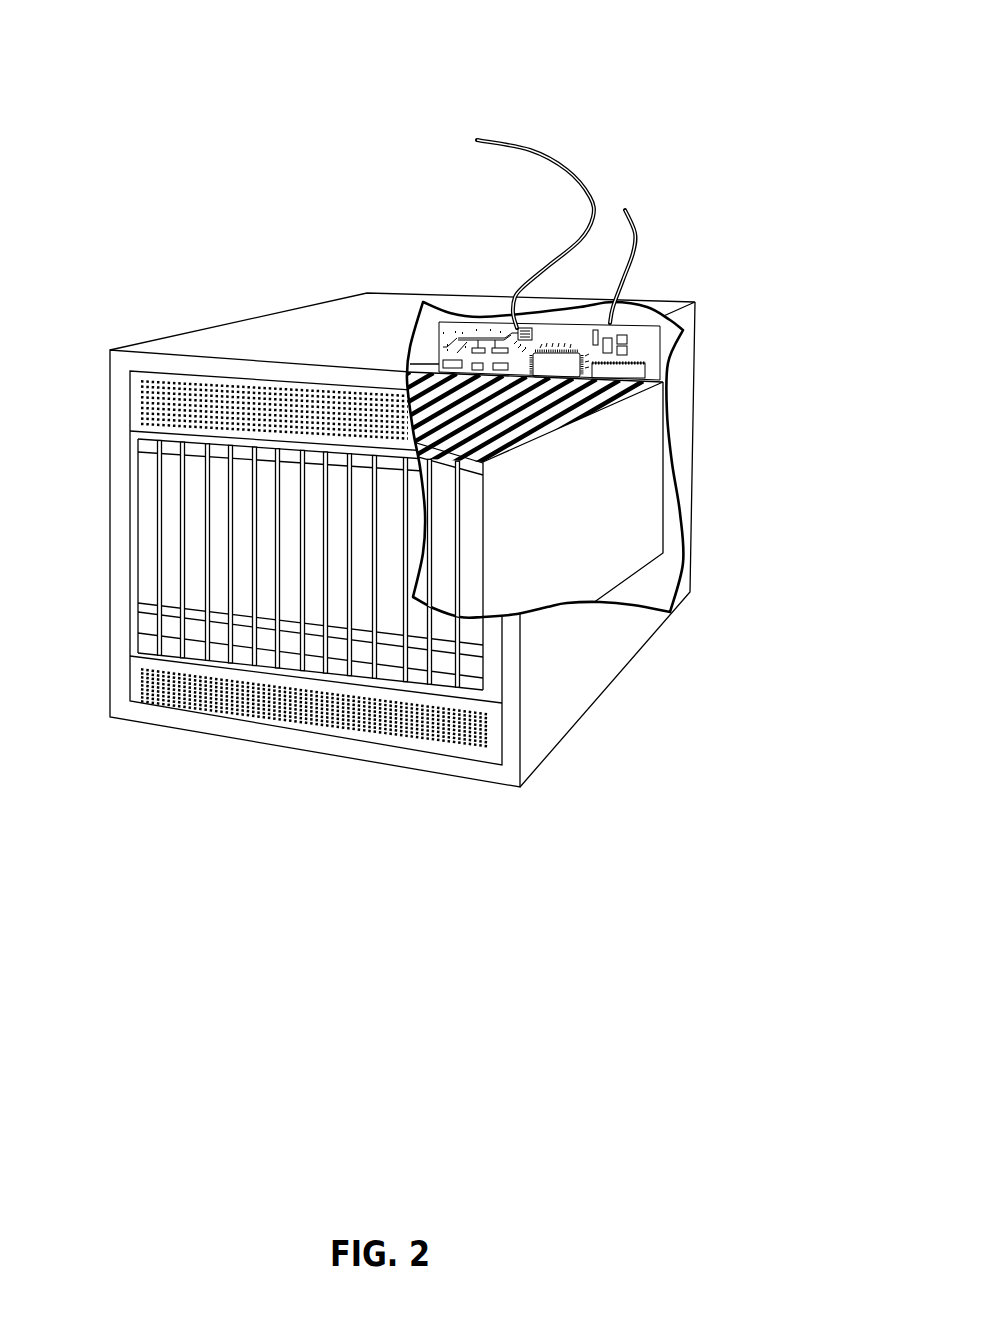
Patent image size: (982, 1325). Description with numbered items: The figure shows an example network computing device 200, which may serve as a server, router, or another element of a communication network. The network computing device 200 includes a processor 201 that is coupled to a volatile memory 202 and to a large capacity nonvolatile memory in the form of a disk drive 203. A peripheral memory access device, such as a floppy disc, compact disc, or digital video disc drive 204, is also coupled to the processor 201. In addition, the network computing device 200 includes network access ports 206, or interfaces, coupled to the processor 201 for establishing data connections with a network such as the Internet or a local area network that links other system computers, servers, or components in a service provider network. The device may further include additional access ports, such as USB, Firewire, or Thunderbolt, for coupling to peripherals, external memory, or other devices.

The network computing device 200 is at (78, 60).
The processor 201 is at (543, 360).
The volatile memory 202 is at (645, 376).
The disk drive 203 is at (195, 498).
The compact disc (CD) or digital video disc (DVD) drive 204 is at (172, 563).
The network access ports 206 is at (562, 162).